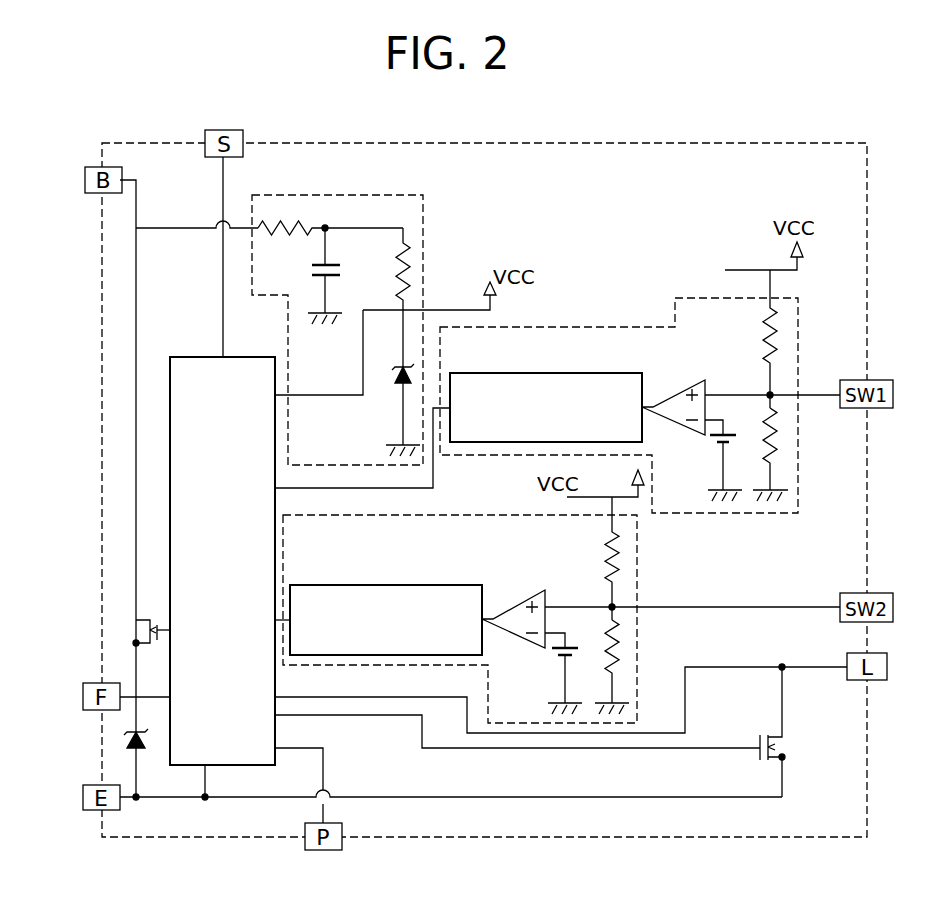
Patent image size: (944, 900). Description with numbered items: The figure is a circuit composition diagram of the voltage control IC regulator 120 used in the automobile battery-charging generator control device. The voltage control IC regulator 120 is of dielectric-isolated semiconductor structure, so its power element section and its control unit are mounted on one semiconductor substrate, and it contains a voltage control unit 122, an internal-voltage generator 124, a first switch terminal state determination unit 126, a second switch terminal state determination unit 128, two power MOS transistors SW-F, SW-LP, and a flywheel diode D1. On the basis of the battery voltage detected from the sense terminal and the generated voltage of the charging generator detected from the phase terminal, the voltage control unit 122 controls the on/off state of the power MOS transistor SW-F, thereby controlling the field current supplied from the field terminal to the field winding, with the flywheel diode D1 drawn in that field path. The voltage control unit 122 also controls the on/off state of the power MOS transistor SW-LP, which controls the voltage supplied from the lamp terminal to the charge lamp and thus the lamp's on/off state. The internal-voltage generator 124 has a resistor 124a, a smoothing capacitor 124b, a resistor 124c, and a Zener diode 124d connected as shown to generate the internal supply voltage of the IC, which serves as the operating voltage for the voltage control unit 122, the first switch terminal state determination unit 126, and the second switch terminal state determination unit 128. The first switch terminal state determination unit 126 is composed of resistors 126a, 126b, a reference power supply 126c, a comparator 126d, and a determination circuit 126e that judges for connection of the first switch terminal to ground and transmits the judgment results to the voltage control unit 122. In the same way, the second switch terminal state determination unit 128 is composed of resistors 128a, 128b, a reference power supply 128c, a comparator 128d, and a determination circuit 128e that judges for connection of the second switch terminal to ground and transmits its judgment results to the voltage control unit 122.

The voltage control IC regulator 120 is at (657, 140).
The voltage control unit 122 is at (195, 357).
The internal-voltage generator 124 is at (383, 310).
The resistor 124a is at (288, 222).
The smoothing capacitor 124b is at (333, 262).
The resistor 124c is at (408, 268).
The Zener diode 124d is at (397, 387).
The SW1 terminal state determination unit 126 is at (652, 391).
The resistor 126a is at (772, 325).
The resistor 126b is at (772, 435).
The reference power supply 126c is at (715, 440).
The comparator 126d is at (712, 382).
The determination circuit 126e is at (577, 373).
The SW2 terminal state determination unit 128 is at (561, 610).
The resistor 128a is at (612, 556).
The resistor 128b is at (615, 650).
The reference power supply 128c is at (560, 650).
The comparator 128d is at (530, 598).
The determination circuit 128e is at (352, 585).
The power MOS transistor SW-F is at (150, 625).
The power MOS transistor SW-LP is at (757, 750).
The flywheel diode D1 is at (125, 742).